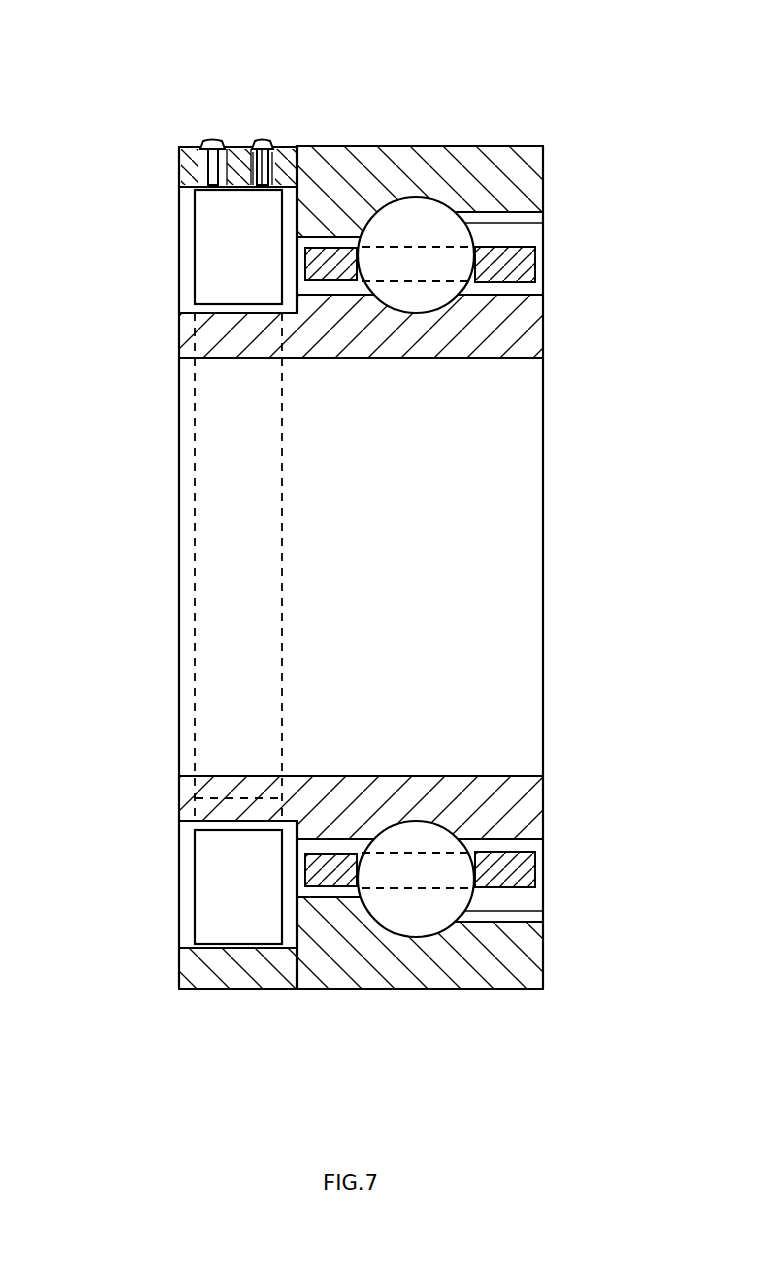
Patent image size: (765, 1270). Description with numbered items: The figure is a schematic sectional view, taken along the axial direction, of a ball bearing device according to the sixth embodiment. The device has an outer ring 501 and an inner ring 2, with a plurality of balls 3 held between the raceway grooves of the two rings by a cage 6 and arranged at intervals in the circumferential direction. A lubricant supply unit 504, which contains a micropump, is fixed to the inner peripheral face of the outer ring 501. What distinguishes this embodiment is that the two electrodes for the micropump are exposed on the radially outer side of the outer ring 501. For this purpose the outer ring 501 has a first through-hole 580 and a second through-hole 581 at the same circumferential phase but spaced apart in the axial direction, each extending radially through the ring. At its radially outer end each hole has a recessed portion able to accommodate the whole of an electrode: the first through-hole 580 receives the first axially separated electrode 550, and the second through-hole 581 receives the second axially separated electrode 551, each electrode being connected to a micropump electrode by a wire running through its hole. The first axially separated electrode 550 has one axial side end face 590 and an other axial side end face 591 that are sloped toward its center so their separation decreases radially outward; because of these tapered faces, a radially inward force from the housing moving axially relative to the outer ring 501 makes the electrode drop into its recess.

The outer ring 501 is at (397, 170).
The inner ring 2 is at (523, 330).
The balls 3 is at (450, 228).
The cage 6 is at (530, 267).
The lubricant supply unit 504 is at (220, 247).
The first through-hole 580 is at (230, 193).
The second through-hole 581 is at (230, 172).
The second axially separated electrode 551 is at (210, 137).
The one axial side end face 590 is at (280, 140).
The first axially separated electrode 550 is at (260, 137).
The other axial side end face 591 is at (250, 140).